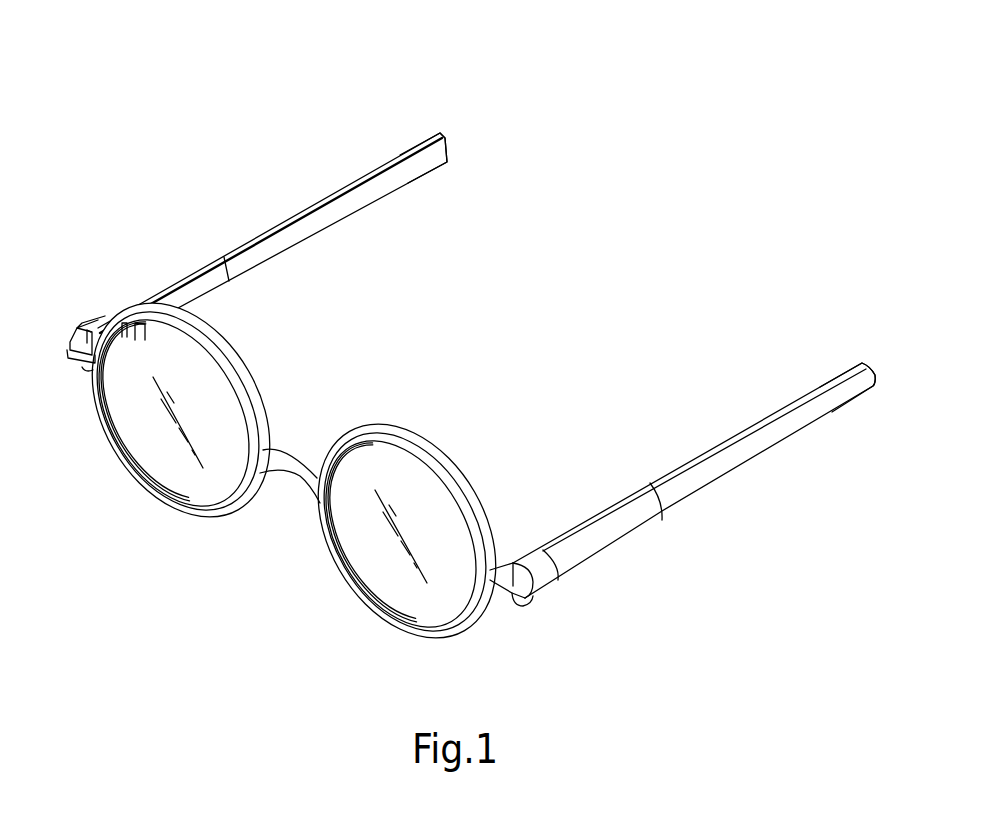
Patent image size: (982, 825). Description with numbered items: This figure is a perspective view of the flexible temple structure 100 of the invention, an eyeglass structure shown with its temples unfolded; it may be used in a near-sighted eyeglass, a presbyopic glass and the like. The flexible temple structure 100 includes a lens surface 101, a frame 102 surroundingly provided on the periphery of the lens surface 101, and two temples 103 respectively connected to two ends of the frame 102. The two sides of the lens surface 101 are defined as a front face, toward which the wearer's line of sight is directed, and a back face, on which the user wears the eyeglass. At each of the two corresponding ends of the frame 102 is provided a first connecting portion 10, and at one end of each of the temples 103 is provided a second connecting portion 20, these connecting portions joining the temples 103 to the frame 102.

The flexible temple structure 100 is at (242, 118).
The first connecting portion 10 is at (94, 317).
The second connecting portion 20 is at (182, 270).
The lens surface 101 is at (203, 392).
The frame 102 is at (243, 390).
The temple 103 is at (432, 160).